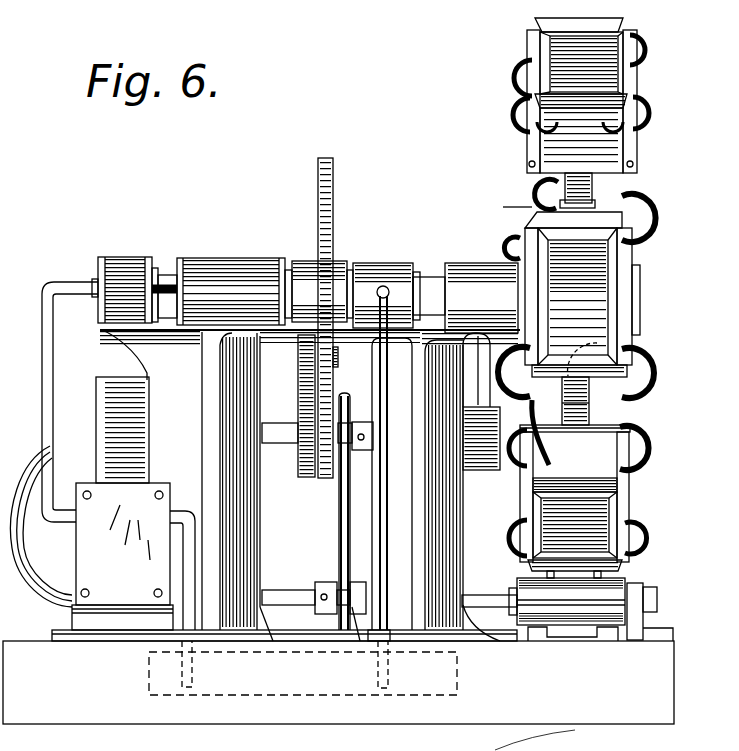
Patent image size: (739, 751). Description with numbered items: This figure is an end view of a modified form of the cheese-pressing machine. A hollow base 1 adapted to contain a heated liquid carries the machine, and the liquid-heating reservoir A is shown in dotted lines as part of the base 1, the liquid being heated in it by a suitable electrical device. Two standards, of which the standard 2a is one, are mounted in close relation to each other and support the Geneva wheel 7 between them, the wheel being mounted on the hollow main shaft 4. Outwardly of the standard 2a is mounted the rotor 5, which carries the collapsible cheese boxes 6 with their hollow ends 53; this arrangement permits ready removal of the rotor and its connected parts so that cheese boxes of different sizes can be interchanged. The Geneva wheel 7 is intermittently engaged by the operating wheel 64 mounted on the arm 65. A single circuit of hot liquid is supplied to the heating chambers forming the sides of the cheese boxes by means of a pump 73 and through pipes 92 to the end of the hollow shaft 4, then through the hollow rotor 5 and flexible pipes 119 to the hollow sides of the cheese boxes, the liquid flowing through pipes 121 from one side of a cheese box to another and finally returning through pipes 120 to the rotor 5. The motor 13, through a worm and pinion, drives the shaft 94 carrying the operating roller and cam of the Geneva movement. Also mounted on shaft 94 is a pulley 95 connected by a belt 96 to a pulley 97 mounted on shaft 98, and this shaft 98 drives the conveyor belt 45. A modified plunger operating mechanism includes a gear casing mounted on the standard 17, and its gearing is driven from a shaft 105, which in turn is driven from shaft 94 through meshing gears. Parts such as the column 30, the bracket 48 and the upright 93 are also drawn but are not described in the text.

The hollow base 1 is at (338, 682).
The liquid-heating reservoir A is at (303, 680).
The standard 2a is at (462, 490).
The hollow main shaft 4 is at (308, 284).
The rotor 5 is at (510, 208).
The cheese box 6 is at (599, 298).
The Geneva wheel 7 is at (404, 318).
The motor 13 is at (103, 512).
The standard 17 is at (573, 656).
The column 30 is at (255, 481).
The conveyor belt 45 is at (559, 591).
The bracket 48 is at (658, 612).
The hollow ends 53 is at (595, 454).
The operating wheel 64 is at (346, 358).
The arm 65 is at (290, 406).
The pump 73 is at (122, 556).
The pipes 92 is at (70, 400).
The column 93 is at (139, 430).
The shaft 94 is at (307, 447).
The pulley 95 is at (337, 462).
The belt 96 is at (326, 511).
The pulley 97 is at (334, 581).
The shaft 98 is at (306, 611).
The shaft 105 is at (466, 401).
The flexible pipes 119 is at (514, 332).
The pipes 120 is at (604, 382).
The pipes 121 is at (599, 295).